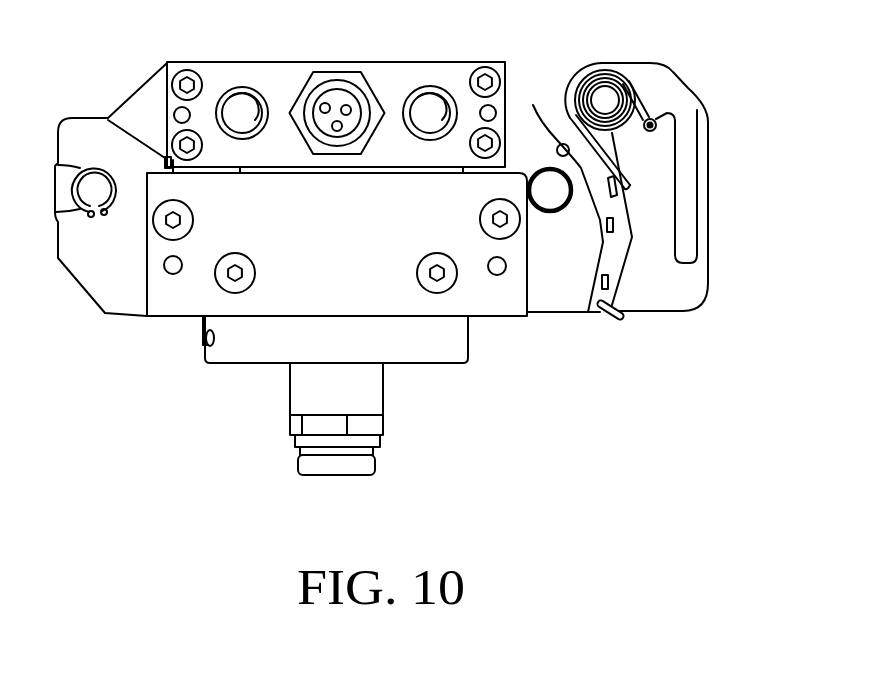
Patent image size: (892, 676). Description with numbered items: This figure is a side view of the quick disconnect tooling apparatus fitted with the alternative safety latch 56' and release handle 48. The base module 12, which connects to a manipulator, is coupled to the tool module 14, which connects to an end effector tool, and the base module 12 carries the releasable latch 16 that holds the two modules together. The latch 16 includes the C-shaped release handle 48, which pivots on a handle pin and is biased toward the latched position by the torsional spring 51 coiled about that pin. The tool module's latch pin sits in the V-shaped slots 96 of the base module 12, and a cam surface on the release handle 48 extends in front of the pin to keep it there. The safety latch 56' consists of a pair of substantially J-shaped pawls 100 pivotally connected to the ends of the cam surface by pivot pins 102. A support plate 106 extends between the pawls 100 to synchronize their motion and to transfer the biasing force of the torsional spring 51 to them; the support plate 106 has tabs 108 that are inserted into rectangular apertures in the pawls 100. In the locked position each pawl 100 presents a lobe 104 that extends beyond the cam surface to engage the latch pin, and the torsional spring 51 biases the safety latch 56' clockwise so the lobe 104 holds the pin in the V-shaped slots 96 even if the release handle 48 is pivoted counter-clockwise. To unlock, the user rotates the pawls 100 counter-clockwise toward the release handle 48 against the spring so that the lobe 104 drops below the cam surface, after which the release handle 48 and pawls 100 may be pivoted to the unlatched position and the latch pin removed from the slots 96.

The base module 12 is at (689, 295).
The tool module 14 is at (133, 95).
The latch 16 is at (683, 77).
The release handle 48 is at (690, 155).
The torsional spring 51 is at (612, 153).
The safety latch 56' is at (720, 272).
The V-shaped slots 96 is at (530, 168).
The pawls 100 is at (587, 312).
The pivot pins 102 is at (562, 144).
The lobe 104 is at (548, 125).
The support plate 106 is at (622, 320).
The tabs 108 is at (600, 224).